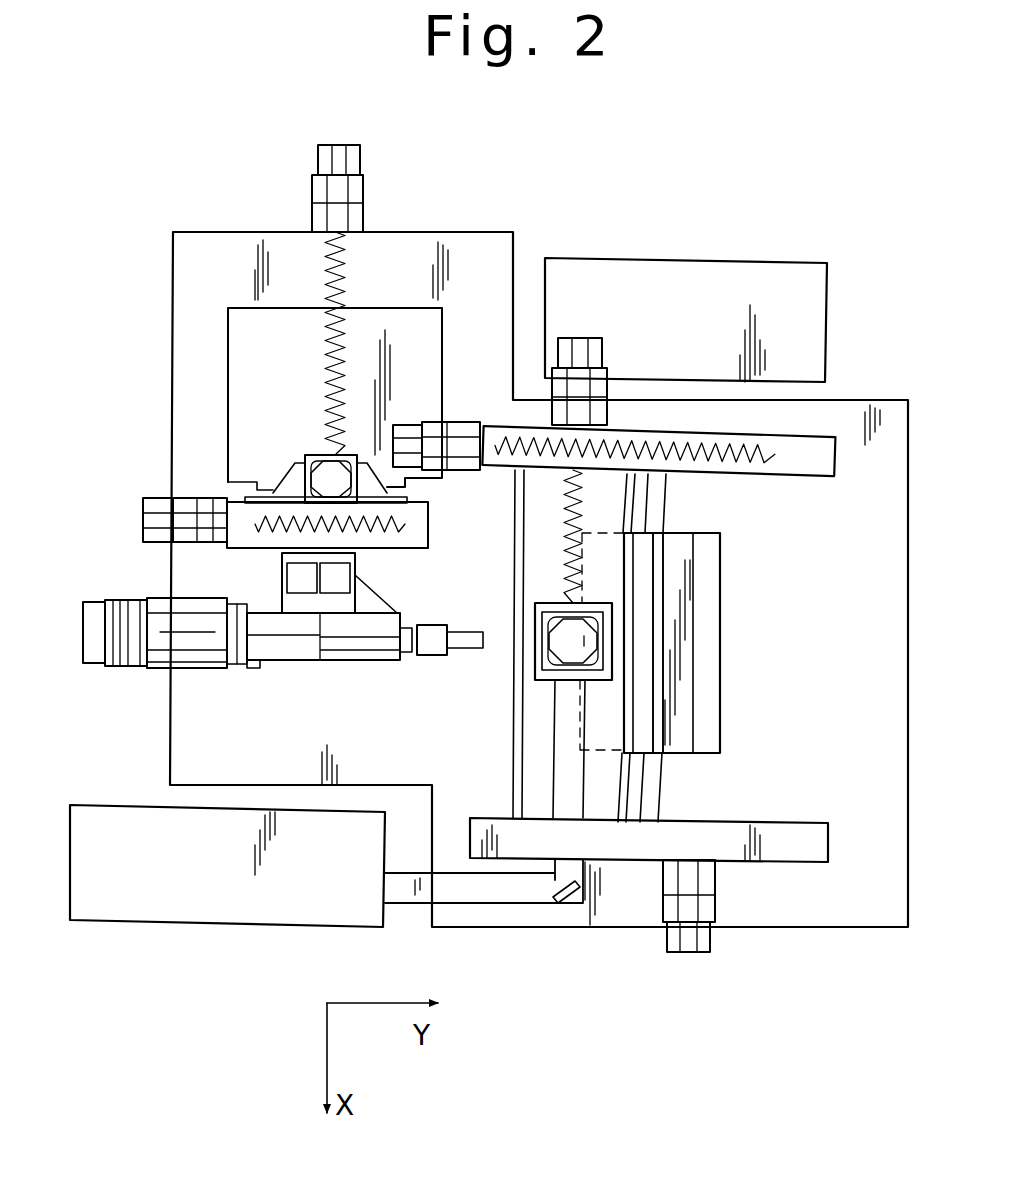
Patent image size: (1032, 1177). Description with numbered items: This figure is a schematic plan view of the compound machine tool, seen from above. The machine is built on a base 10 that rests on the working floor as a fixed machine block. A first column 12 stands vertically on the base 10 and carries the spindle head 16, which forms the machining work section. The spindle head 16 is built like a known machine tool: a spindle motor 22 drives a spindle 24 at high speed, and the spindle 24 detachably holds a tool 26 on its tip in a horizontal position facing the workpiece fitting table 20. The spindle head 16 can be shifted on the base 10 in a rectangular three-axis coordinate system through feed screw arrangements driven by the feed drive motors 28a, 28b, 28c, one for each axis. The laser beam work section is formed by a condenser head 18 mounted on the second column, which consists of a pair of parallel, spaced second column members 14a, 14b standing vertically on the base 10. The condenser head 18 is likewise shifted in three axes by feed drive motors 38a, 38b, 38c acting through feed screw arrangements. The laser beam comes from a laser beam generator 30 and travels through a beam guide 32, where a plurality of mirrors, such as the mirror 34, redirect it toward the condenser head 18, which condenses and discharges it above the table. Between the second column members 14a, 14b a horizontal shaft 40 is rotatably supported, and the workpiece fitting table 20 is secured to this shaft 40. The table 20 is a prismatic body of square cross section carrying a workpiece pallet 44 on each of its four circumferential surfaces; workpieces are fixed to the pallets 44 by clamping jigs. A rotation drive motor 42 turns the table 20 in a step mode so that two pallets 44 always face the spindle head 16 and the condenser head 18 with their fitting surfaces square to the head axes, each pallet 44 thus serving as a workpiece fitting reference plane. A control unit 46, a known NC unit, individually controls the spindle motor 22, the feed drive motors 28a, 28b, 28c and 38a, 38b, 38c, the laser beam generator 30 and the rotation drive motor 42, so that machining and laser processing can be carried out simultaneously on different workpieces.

The base 10 is at (173, 280).
The first column 12 is at (228, 347).
The second column member 14a is at (836, 448).
The second column member 14b is at (829, 840).
The spindle head 16 is at (274, 655).
The condenser head 18 is at (543, 683).
The workpiece fitting table 20 is at (722, 656).
The spindle motor 22 is at (93, 652).
The spindle 24 is at (370, 662).
The tool 26 is at (466, 652).
The feed drive motor 28a is at (335, 162).
The feed drive motor 28b is at (155, 522).
The feed drive motor 28c is at (322, 472).
The laser beam generator 30 is at (218, 886).
The beam guide 32 is at (410, 906).
The mirror 34 is at (572, 905).
The feed drive motor 38a is at (580, 345).
The feed drive motor 38b is at (455, 432).
The feed drive motor 38c is at (563, 630).
The horizontal shaft 40 is at (660, 797).
The rotation drive motor 42 is at (712, 907).
The workpiece pallet 44 is at (712, 590).
The control unit 46 is at (720, 341).